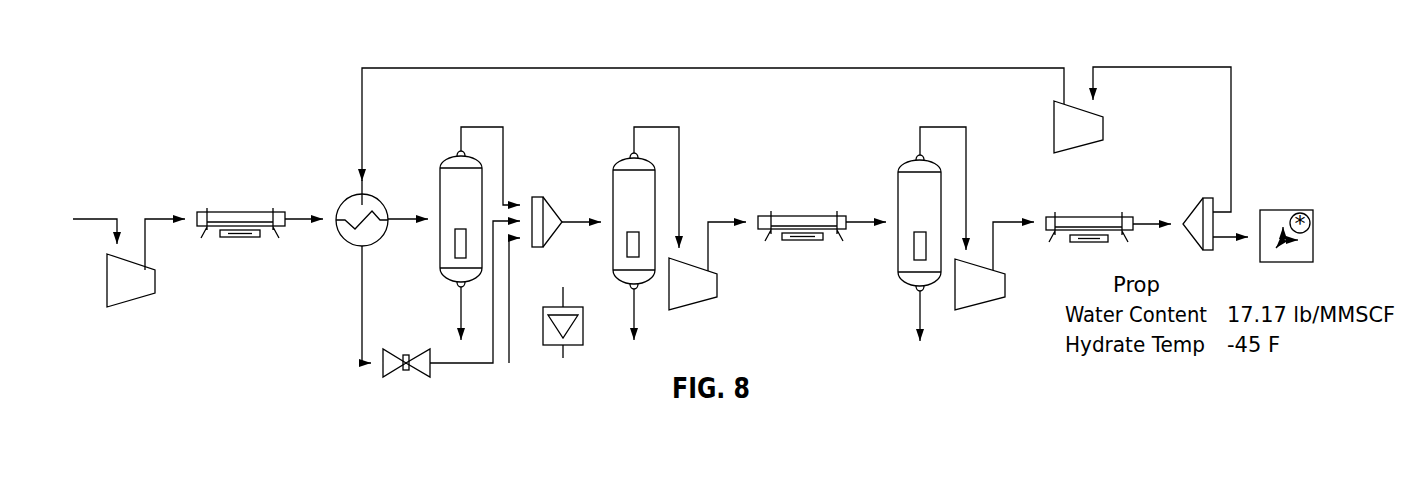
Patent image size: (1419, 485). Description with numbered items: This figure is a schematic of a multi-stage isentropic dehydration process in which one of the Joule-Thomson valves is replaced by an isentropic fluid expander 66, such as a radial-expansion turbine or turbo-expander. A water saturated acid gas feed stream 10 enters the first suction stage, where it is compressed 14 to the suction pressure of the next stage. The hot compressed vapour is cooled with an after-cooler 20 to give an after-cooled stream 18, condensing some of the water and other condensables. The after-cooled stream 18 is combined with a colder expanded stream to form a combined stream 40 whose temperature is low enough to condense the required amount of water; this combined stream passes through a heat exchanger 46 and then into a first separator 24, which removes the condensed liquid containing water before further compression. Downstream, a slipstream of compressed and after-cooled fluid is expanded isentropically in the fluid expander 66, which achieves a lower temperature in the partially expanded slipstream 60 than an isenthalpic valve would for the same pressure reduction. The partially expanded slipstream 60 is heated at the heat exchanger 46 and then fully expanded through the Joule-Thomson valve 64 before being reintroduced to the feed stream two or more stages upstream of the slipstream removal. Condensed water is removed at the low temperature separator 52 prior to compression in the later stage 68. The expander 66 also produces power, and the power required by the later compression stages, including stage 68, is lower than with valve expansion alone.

The water saturated acid gas feed stream 10 is at (97, 219).
The compression 14 is at (167, 219).
The after-cooler 20 is at (242, 212).
The after-cooled stream 18 is at (308, 222).
The heat exchanger 46 is at (350, 200).
The combined stream 40 is at (407, 216).
The first separator 24 is at (447, 160).
The low temperature separator 52 is at (620, 162).
The partially expanded slipstream 60 is at (712, 67).
The Joule-Thomson valve 64 is at (406, 355).
The isentropic fluid expander 66 is at (718, 283).
The compression stage 68 is at (968, 311).